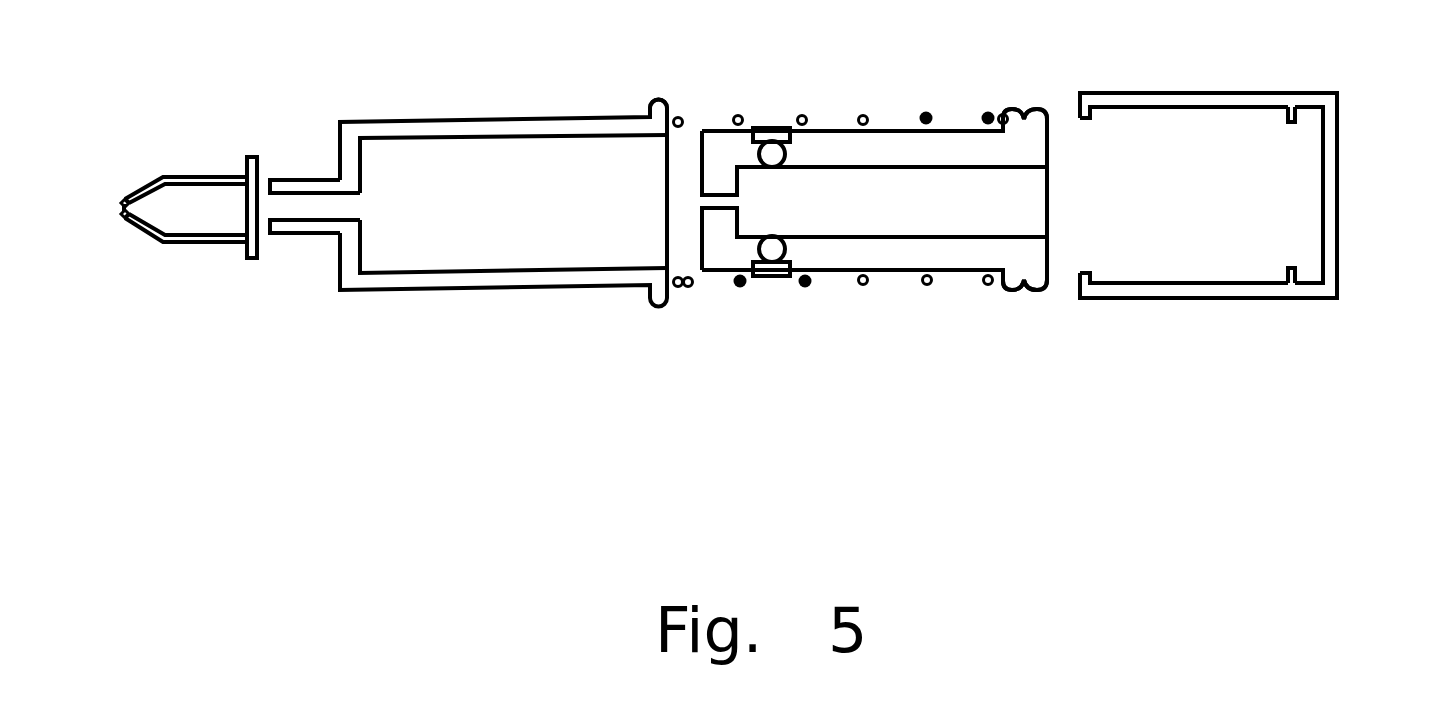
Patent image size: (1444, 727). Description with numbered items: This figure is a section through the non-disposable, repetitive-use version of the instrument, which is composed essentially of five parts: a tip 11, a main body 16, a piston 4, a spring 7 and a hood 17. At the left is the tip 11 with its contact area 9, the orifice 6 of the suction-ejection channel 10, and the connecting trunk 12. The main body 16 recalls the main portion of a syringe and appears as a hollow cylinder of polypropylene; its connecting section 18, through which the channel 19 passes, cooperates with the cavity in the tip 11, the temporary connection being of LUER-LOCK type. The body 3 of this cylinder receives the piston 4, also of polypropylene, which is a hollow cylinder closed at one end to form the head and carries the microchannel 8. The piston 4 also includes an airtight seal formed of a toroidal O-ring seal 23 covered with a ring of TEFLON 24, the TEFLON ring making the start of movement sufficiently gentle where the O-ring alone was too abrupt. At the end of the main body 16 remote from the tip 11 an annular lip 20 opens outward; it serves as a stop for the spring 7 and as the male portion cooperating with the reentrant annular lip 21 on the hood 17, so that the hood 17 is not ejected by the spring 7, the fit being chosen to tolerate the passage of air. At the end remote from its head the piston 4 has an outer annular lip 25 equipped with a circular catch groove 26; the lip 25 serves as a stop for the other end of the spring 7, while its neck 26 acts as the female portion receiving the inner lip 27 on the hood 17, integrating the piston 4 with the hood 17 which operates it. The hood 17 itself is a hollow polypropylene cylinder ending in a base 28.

The plunger cylinder 3 is at (513, 204).
The piston 4 is at (883, 250).
The orifice 6 is at (123, 214).
The spring 7 is at (988, 118).
The microchannel 8 is at (860, 200).
The contact area 9 is at (123, 200).
The suction-ejection channel 10 is at (132, 222).
The tip 11 is at (237, 160).
The connecting trunk 12 is at (219, 266).
The main body 16 is at (503, 157).
The hood 17 is at (1260, 149).
The connecting section 18 is at (300, 232).
The channel 19 is at (308, 205).
The annular lip 20 is at (659, 100).
The reentrant annular lip 21 is at (1085, 118).
The O-ring seal 23 is at (772, 150).
The ring of TEFLON 24 is at (765, 127).
The outer annular lip 25 is at (1033, 267).
The circular catch groove 26 is at (1028, 107).
The inner lip 27 is at (1287, 123).
The base 28 is at (1323, 122).